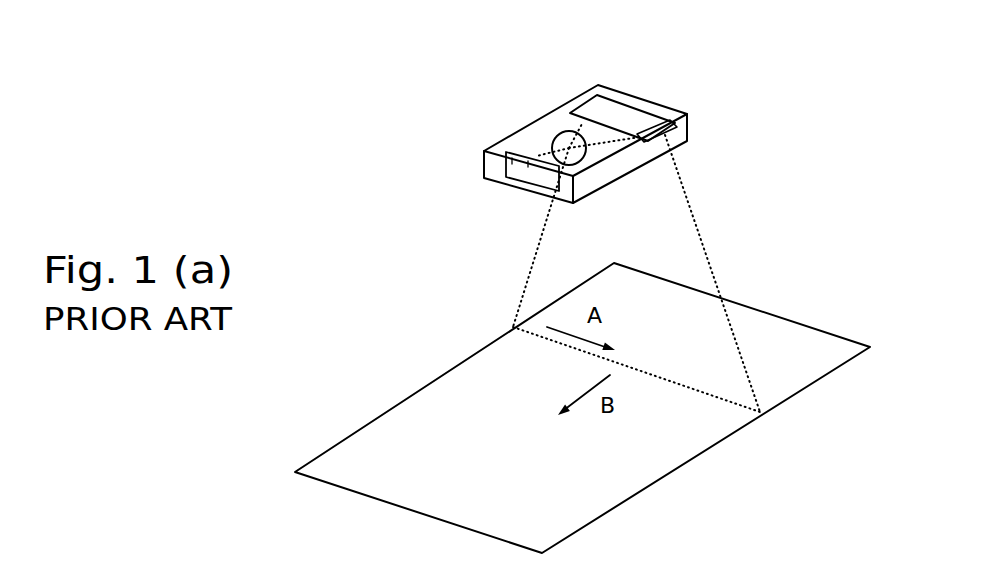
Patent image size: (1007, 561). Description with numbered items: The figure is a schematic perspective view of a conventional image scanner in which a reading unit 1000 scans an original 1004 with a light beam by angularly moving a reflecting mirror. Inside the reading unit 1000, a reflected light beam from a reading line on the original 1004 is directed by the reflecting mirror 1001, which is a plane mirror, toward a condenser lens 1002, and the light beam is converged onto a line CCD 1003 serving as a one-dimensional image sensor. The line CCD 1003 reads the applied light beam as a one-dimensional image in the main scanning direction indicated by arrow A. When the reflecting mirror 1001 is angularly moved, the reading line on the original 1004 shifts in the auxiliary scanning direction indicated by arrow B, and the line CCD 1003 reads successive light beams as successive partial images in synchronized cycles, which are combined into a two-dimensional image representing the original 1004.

The reading unit 1000 is at (698, 132).
The reflecting mirror 1001 is at (630, 117).
The condenser lens 1002 is at (575, 144).
The line CCD 1003 is at (520, 172).
The original 1004 is at (775, 314).